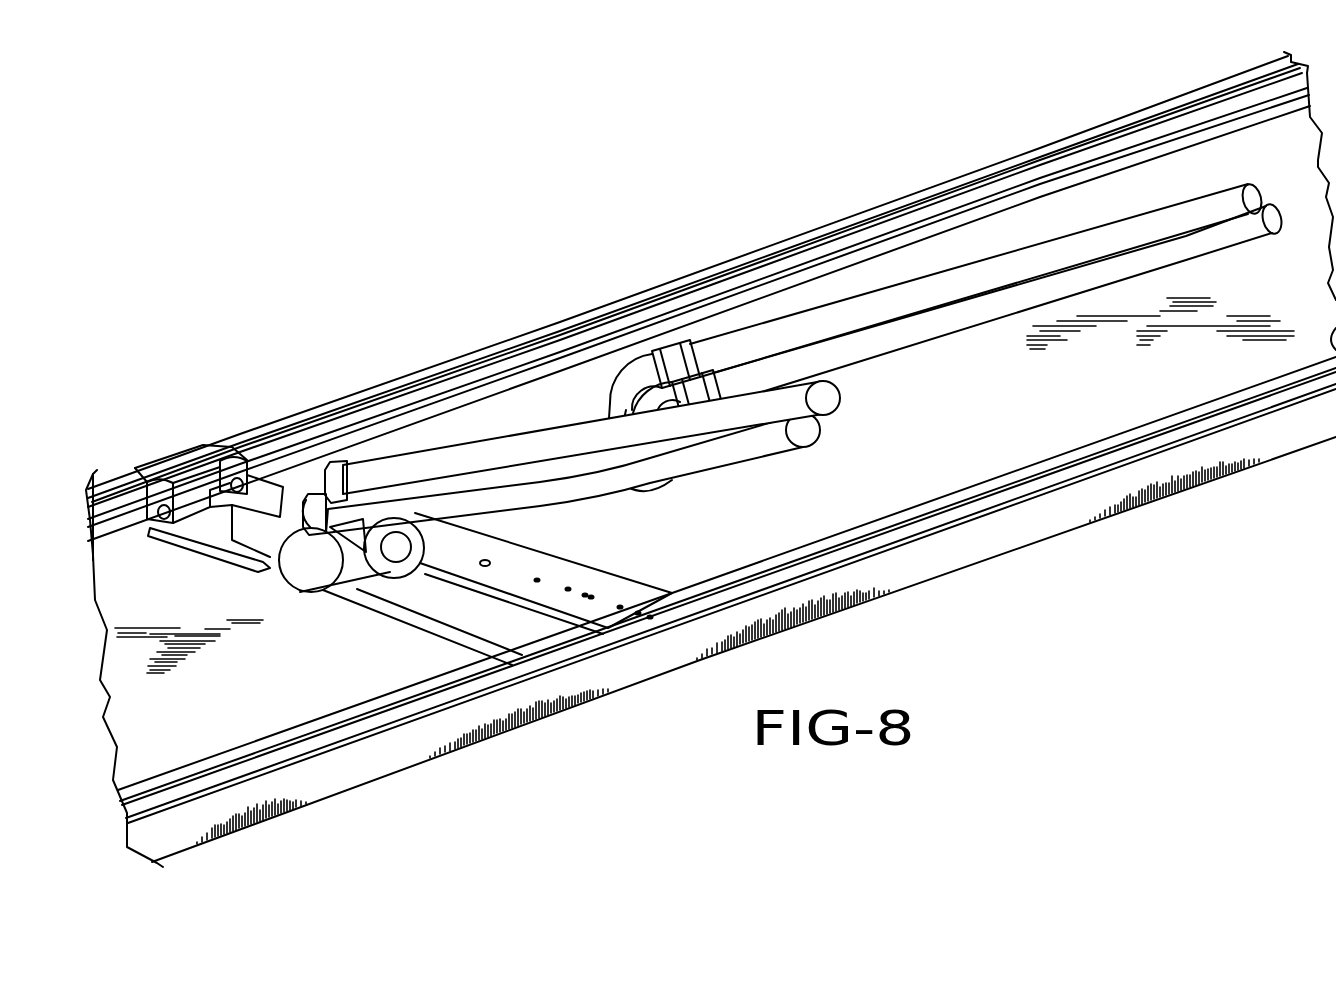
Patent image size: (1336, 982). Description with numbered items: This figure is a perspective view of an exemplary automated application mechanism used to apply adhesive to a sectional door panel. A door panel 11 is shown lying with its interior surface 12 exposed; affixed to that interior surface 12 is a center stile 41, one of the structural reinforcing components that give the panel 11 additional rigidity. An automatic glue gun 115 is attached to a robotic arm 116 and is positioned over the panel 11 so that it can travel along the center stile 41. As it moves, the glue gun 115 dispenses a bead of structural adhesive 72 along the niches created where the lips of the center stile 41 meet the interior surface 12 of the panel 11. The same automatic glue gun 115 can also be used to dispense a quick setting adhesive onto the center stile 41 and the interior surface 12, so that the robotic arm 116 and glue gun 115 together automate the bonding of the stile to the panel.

The panel 11 is at (962, 413).
The interior surface 12 is at (243, 700).
The center stile 41 is at (553, 571).
The structural adhesive 72 is at (198, 553).
The automatic glue gun 115 is at (318, 574).
The robotic arm 116 is at (748, 440).